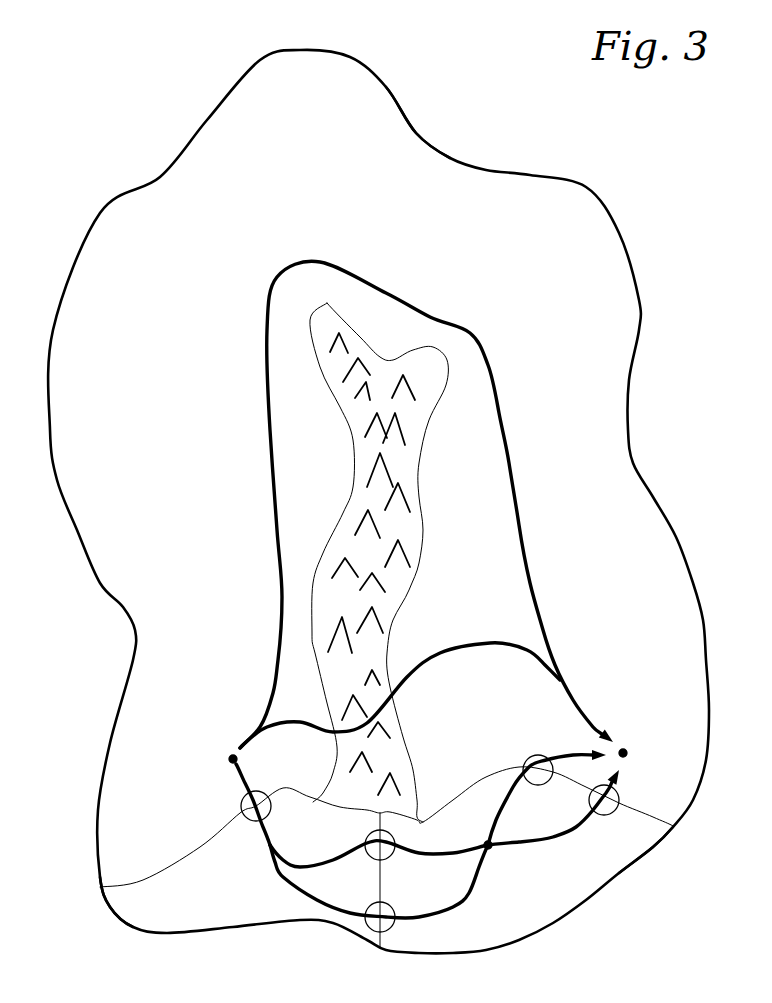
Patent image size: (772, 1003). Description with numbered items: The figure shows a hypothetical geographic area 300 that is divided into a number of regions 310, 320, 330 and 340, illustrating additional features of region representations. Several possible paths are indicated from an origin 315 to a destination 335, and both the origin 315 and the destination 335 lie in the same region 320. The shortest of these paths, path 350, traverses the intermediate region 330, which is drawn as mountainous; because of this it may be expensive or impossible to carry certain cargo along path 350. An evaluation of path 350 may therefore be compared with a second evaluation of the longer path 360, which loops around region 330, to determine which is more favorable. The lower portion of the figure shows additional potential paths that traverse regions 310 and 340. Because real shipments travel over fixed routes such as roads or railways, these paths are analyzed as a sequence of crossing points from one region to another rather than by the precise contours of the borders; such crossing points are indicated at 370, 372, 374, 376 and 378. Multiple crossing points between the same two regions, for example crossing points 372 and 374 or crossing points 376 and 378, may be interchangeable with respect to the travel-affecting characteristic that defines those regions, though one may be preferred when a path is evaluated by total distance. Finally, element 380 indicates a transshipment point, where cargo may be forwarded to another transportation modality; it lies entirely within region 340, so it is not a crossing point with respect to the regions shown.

The geographic area 300 is at (82, 548).
The region 310 is at (163, 909).
The origin 315 is at (231, 757).
The region 320 is at (411, 156).
The region 330 is at (397, 518).
The destination 335 is at (629, 750).
The region 340 is at (652, 843).
The path 350 is at (477, 649).
The path 360 is at (268, 291).
The crossing point 370 is at (241, 806).
The crossing point 372 is at (367, 834).
The crossing point 374 is at (387, 923).
The crossing point 376 is at (524, 765).
The crossing point 378 is at (612, 814).
The transshipment point 380 is at (493, 848).